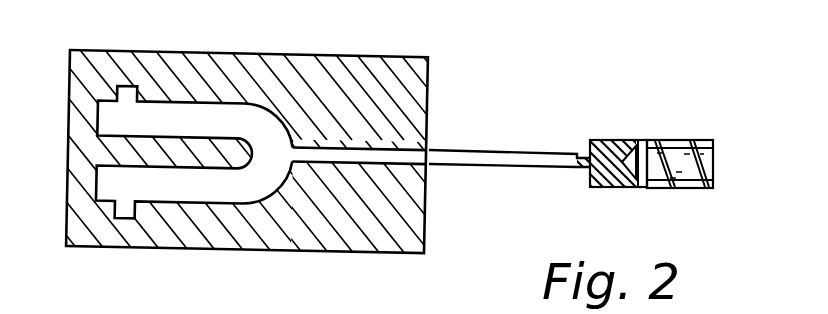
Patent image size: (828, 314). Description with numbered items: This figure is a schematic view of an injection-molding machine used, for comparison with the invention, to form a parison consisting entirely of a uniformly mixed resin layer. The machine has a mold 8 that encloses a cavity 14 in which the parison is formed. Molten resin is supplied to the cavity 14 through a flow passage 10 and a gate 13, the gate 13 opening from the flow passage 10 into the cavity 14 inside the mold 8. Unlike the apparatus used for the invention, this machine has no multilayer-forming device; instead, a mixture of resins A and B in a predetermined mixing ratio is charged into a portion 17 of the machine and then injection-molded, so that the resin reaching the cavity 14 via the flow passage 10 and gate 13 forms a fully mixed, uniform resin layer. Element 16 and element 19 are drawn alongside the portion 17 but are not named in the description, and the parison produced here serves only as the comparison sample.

The mold 8 is at (369, 56).
The flow passage 10 is at (398, 140).
The gate 13 is at (302, 150).
The cavity 14 is at (177, 108).
The nut 16 is at (680, 138).
The portion 17 is at (610, 138).
The rod 19 is at (552, 152).